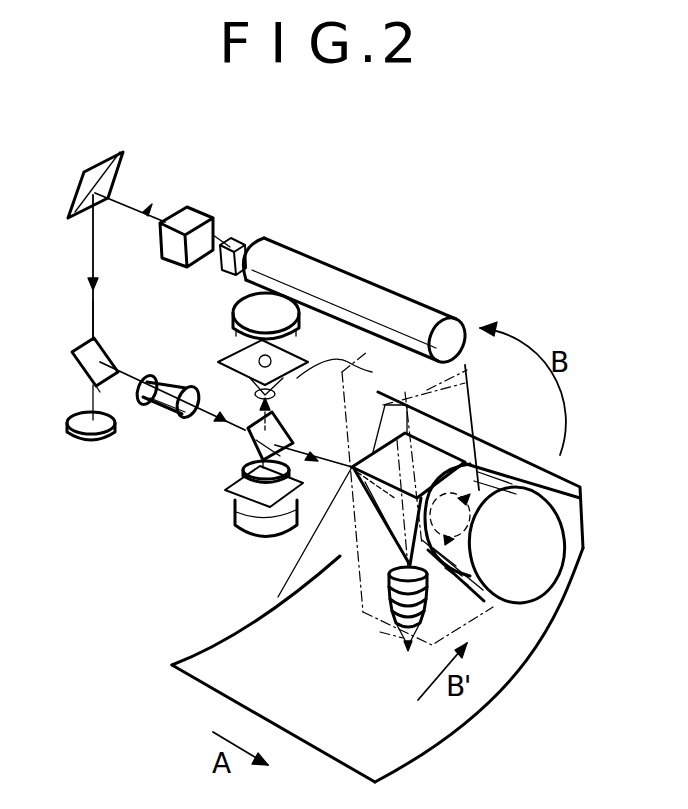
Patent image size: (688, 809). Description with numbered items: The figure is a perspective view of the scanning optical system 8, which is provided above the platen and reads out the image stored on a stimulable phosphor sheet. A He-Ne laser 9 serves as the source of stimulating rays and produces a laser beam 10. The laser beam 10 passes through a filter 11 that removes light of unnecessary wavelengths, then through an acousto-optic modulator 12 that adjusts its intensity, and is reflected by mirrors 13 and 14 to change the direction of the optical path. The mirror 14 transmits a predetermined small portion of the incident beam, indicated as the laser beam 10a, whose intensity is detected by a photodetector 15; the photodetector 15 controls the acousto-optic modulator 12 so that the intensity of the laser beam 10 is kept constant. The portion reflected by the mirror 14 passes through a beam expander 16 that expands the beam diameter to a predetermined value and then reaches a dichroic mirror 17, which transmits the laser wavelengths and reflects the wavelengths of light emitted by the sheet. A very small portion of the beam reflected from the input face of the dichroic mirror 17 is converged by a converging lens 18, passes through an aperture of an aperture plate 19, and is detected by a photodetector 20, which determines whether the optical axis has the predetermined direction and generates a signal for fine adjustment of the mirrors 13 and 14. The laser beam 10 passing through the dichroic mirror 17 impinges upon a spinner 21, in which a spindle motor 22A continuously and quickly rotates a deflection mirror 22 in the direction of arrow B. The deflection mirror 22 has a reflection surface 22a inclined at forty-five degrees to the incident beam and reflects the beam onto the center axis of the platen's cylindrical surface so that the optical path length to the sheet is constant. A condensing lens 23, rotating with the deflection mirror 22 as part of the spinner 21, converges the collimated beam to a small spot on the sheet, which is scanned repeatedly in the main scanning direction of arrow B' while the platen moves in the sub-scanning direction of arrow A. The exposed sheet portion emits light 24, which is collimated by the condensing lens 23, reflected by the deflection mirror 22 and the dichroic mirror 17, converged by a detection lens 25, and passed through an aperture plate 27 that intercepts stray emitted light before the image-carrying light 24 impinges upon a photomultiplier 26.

The scanning optical system 8 is at (500, 287).
The He-Ne laser 9 is at (403, 300).
The laser beam 10 is at (234, 236).
The laser beam portion transmitted through mirror 10a is at (85, 398).
The filter 11 is at (243, 247).
The acousto-optic modulator 12 is at (185, 215).
The mirror 13 is at (70, 205).
The mirror 14 is at (72, 352).
The photodetector 15 is at (100, 450).
The beam expander 16 is at (158, 378).
The dichroic mirror 17 is at (280, 418).
The converging lens 18 is at (243, 467).
The aperture plate 19 is at (226, 489).
The photodetector 20 is at (252, 528).
The spinner 21 is at (510, 452).
The deflection mirror 22 is at (430, 453).
The spindle motor 22A is at (548, 530).
The reflection surface 22a is at (392, 522).
The condensing lens 23 is at (380, 607).
The emitted light 24 is at (388, 636).
The detection lens 25 is at (395, 498).
The photomultiplier 26 is at (245, 300).
The aperture plate 27 is at (242, 352).